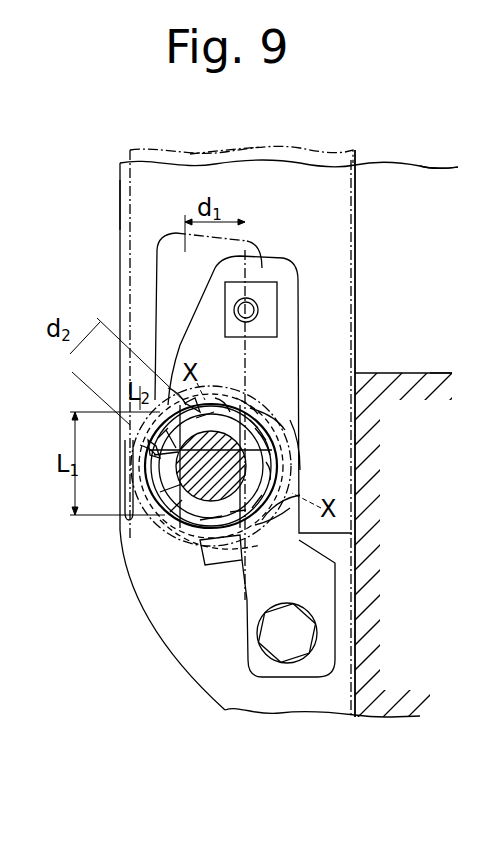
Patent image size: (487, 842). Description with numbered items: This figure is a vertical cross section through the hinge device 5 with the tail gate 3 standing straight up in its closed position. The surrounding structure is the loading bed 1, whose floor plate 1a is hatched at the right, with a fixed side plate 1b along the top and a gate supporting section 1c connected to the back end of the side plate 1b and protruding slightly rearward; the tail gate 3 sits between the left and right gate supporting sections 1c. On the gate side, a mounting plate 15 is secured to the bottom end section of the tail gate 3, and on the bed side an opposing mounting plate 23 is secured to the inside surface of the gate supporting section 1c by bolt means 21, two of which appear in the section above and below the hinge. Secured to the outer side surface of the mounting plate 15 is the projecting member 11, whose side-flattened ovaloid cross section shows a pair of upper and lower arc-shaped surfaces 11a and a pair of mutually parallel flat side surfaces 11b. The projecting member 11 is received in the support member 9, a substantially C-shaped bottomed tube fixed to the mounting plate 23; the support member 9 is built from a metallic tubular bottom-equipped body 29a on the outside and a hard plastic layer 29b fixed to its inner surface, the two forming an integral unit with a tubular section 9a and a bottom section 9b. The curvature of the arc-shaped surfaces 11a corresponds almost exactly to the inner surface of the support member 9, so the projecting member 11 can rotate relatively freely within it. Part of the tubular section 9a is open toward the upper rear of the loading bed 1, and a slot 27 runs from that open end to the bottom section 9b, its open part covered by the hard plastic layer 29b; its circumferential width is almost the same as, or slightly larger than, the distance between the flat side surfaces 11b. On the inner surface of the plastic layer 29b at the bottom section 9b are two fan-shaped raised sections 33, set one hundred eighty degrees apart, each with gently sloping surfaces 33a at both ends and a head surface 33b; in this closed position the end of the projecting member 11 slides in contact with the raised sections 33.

The loading bed 1 is at (409, 163).
The floor plate 1a is at (453, 375).
The fixed side plate 1b is at (431, 178).
The gate supporting section 1c is at (118, 201).
The tail gate 3 is at (224, 152).
The hinge device 5 is at (243, 562).
The support member 9 is at (262, 410).
The tubular section 9a is at (272, 418).
The bottom section 9b is at (276, 484).
The projecting member 11 is at (304, 576).
The arc-shaped surface 11a is at (216, 396).
The flat side surface 11b is at (168, 388).
The mounting plate 15 is at (172, 232).
The bolt means 21 is at (262, 302).
The mounting plate 23 is at (265, 257).
The slot 27 is at (148, 448).
The tubular bottom-equipped body 29a is at (262, 424).
The hard plastic layer 29b is at (278, 500).
The raised section 33 is at (272, 437).
The gently sloping surface 33a is at (240, 400).
The head surface 33b is at (300, 458).